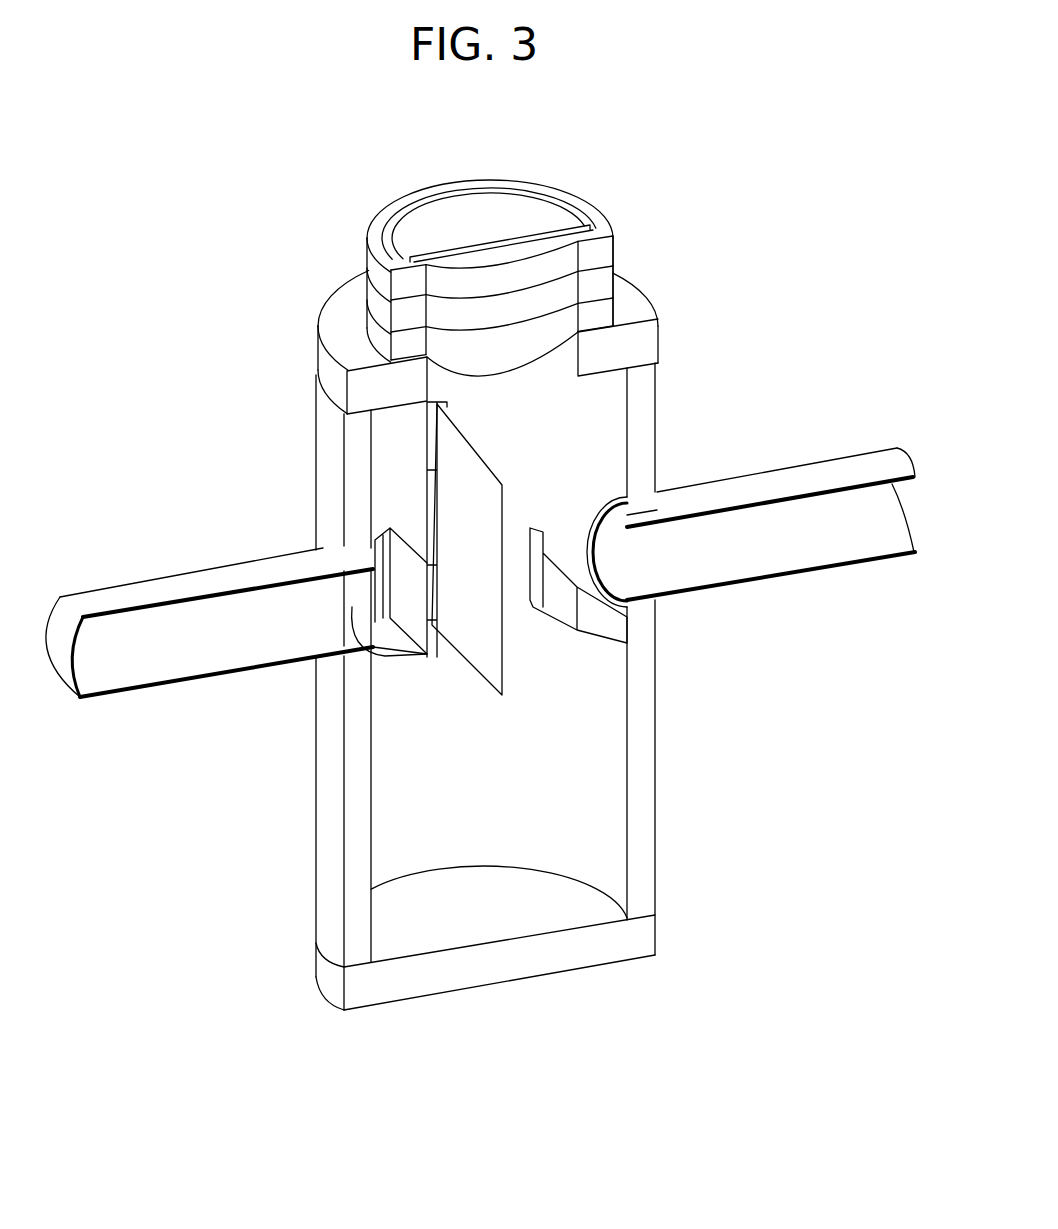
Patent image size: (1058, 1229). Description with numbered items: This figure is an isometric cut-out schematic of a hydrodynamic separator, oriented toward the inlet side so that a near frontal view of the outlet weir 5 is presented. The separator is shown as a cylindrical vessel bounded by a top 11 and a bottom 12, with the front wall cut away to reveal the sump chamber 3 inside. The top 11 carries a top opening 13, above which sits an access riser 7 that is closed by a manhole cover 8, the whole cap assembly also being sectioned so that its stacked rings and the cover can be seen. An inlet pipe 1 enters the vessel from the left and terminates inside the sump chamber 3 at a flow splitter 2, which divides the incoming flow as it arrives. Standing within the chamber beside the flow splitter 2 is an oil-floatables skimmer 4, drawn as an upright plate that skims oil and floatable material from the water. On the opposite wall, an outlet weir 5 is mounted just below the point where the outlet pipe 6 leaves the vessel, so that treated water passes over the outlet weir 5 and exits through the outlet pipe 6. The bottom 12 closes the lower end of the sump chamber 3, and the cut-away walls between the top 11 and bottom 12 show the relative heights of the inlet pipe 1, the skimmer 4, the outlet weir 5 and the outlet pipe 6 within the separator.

The inlet pipe 1 is at (260, 560).
The flow splitter 2 is at (412, 646).
The sump chamber 3 is at (567, 825).
The oil-floatables skimmer 4 is at (503, 487).
The outlet weir 5 is at (608, 636).
The outlet pipe 6 is at (700, 592).
The access riser 7 is at (603, 250).
The manhole cover 8 is at (475, 222).
The top 11 is at (630, 347).
The bottom 12 is at (568, 948).
The top opening 13 is at (452, 478).